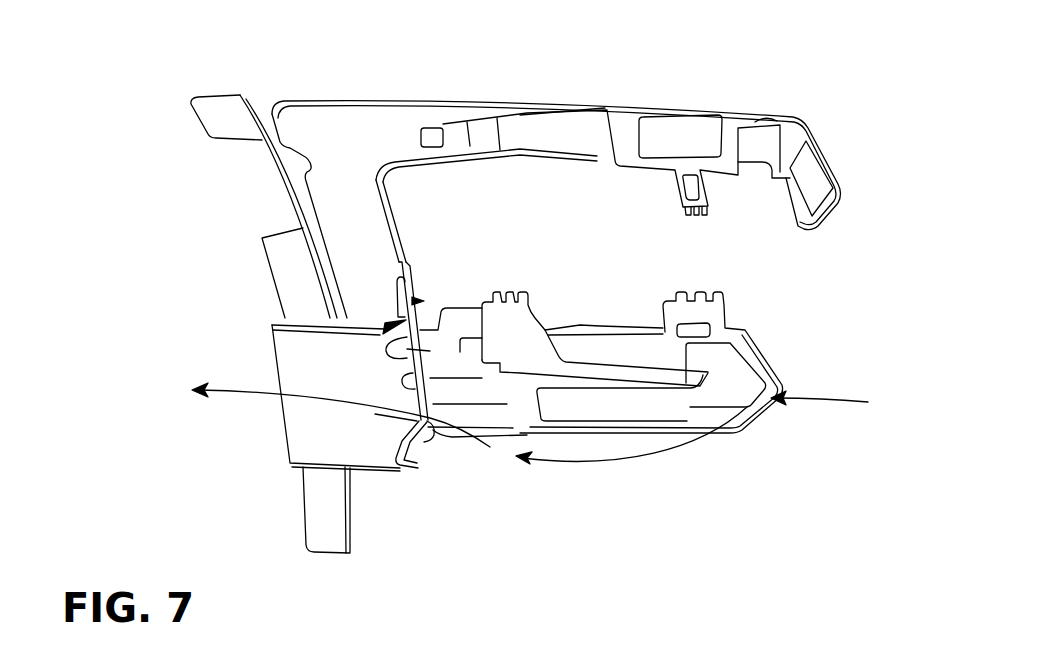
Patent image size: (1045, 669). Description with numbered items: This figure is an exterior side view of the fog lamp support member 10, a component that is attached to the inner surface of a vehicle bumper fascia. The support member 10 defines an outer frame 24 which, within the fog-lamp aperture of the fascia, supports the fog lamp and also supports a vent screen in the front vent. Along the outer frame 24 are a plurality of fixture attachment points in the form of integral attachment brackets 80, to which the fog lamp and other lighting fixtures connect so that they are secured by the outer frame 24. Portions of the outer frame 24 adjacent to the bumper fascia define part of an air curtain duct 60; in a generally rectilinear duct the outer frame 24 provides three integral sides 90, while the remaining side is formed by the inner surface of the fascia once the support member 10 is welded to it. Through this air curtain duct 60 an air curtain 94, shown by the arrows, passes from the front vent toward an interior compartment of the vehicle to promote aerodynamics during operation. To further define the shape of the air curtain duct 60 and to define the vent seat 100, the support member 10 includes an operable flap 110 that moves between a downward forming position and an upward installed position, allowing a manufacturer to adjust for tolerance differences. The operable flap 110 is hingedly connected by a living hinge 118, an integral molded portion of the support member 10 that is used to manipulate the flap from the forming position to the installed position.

The support member 10 is at (581, 89).
The outer frame 24 is at (620, 355).
The air curtain duct 60 is at (298, 345).
The integral attachment brackets 80 is at (430, 130).
The integral sides 90 is at (315, 433).
The air curtain 94 is at (333, 397).
The vent seat 100 is at (427, 322).
The operable flap 110 is at (427, 376).
The living hinge 118 is at (418, 468).